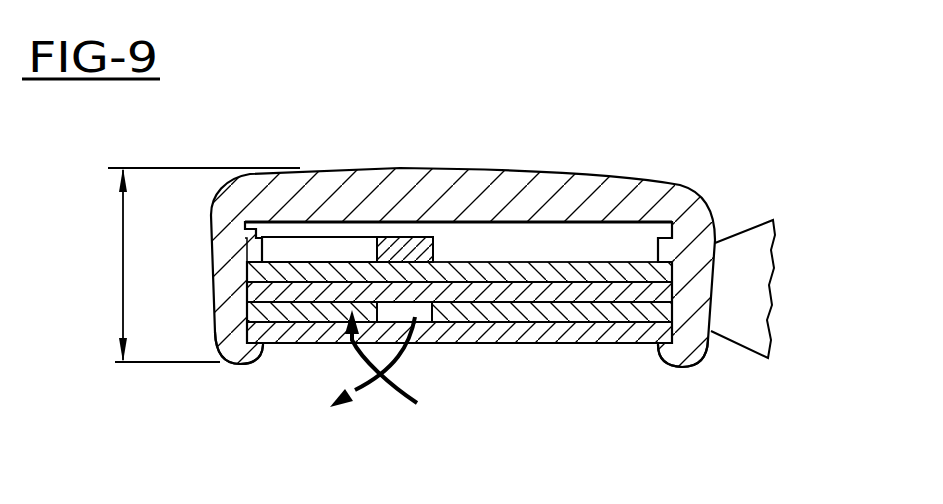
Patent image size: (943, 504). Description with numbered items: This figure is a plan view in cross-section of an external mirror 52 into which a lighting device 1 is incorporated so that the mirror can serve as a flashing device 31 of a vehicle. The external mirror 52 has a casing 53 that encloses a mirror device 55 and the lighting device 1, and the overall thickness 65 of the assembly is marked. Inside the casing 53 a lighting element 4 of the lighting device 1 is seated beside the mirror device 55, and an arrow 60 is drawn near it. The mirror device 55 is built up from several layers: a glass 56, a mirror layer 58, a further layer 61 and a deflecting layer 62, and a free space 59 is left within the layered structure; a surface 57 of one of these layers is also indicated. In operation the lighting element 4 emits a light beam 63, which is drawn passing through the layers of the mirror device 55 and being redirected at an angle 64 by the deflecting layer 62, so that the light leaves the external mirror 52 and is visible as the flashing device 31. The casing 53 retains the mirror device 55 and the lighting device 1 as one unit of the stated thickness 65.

The lighting device 1 is at (348, 233).
The lighting element 4 is at (403, 248).
The flashing device 31 is at (232, 372).
The external mirror 52 is at (727, 193).
The casing 53 is at (517, 175).
The mirror device 55 is at (636, 360).
The glass 56 is at (568, 345).
The surface 57 is at (292, 300).
The mirror layer 58 is at (523, 303).
The free space 59 is at (432, 322).
The arrow 60 is at (288, 250).
The layer 61 is at (598, 283).
The deflecting layer 62 is at (633, 282).
The light beam 63 is at (357, 385).
The angle 64 is at (350, 349).
The thickness 65 is at (123, 250).